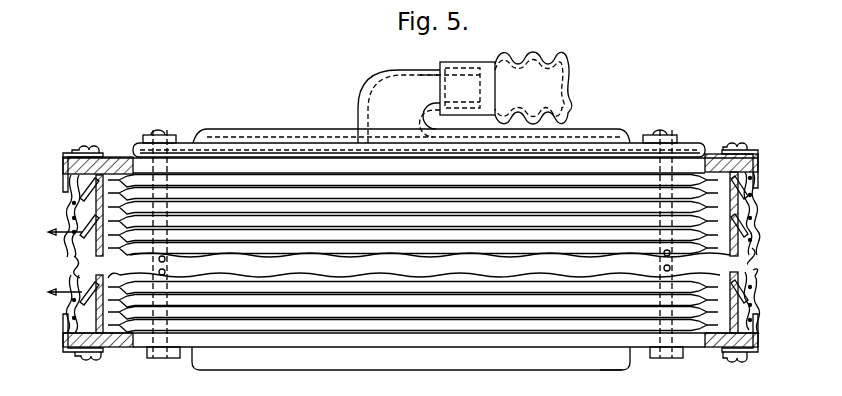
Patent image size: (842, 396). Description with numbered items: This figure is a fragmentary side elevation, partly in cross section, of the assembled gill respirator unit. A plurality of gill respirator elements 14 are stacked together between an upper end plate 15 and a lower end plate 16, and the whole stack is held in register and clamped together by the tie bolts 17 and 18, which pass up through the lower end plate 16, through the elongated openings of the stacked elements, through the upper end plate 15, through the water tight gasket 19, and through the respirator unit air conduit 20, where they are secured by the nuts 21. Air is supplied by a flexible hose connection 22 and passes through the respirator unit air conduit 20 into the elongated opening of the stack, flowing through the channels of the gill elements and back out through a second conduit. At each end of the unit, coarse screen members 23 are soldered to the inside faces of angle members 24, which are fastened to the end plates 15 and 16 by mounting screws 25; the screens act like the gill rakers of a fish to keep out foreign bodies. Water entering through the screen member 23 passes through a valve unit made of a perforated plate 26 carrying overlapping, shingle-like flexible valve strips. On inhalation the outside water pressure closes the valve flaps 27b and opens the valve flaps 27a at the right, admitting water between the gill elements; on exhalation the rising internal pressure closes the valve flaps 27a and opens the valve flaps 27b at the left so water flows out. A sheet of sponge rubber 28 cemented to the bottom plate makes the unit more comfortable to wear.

The gill respirator element 14 is at (256, 207).
The upper end plate 15 is at (298, 158).
The lower end plate 16 is at (230, 338).
The tie bolt 17 is at (148, 176).
The tie bolt 18 is at (690, 152).
The water tight gasket 19 is at (338, 158).
The respirator unit air conduit 20 is at (384, 103).
The nut 21 is at (166, 130).
The flexible hose connection 22 is at (545, 77).
The coarse screen member 23 is at (68, 208).
The angle member 24 is at (64, 176).
The mounting screw 25 is at (99, 128).
The perforated plate 26 is at (744, 273).
The valve flap 27a is at (757, 245).
The valve flap 27b is at (72, 265).
The sheet of sponge rubber 28 is at (620, 356).